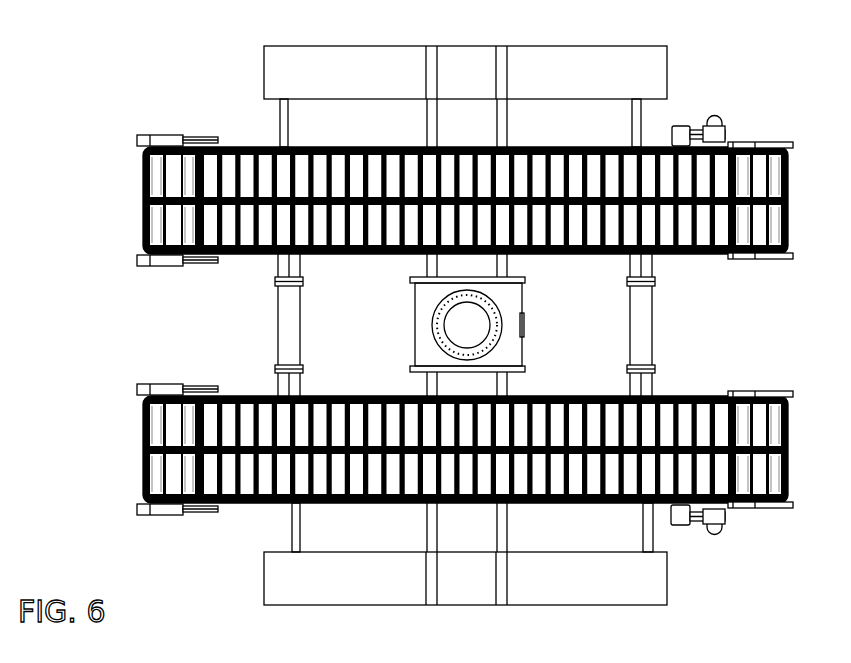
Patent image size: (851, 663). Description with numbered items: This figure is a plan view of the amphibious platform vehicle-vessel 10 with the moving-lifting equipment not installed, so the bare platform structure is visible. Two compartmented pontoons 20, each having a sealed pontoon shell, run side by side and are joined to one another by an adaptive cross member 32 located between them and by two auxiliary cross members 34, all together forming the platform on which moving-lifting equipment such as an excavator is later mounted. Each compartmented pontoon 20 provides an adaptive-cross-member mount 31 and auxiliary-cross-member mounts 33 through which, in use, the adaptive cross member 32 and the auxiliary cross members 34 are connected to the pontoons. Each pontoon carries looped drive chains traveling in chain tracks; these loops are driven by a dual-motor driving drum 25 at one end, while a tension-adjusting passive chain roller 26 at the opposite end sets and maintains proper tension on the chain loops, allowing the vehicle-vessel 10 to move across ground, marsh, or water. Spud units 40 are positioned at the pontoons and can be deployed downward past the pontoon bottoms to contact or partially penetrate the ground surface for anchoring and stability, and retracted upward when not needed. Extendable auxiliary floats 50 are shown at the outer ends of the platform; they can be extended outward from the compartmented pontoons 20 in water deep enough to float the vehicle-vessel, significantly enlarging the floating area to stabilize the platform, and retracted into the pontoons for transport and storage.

The amphibious platform vehicle-vessel 10 is at (183, 53).
The compartmented pontoon 20 is at (143, 108).
The dual-motor driving drum 25 is at (168, 137).
The tension-adjusting passive chain roller 26 is at (765, 143).
The adaptive-cross-member mount 31 is at (410, 279).
The adaptive cross member 32 is at (520, 296).
The auxiliary-cross-member mount 33 is at (302, 282).
The auxiliary cross member 34 is at (296, 302).
The spud unit 40 is at (712, 106).
The extendable auxiliary float 50 is at (663, 63).